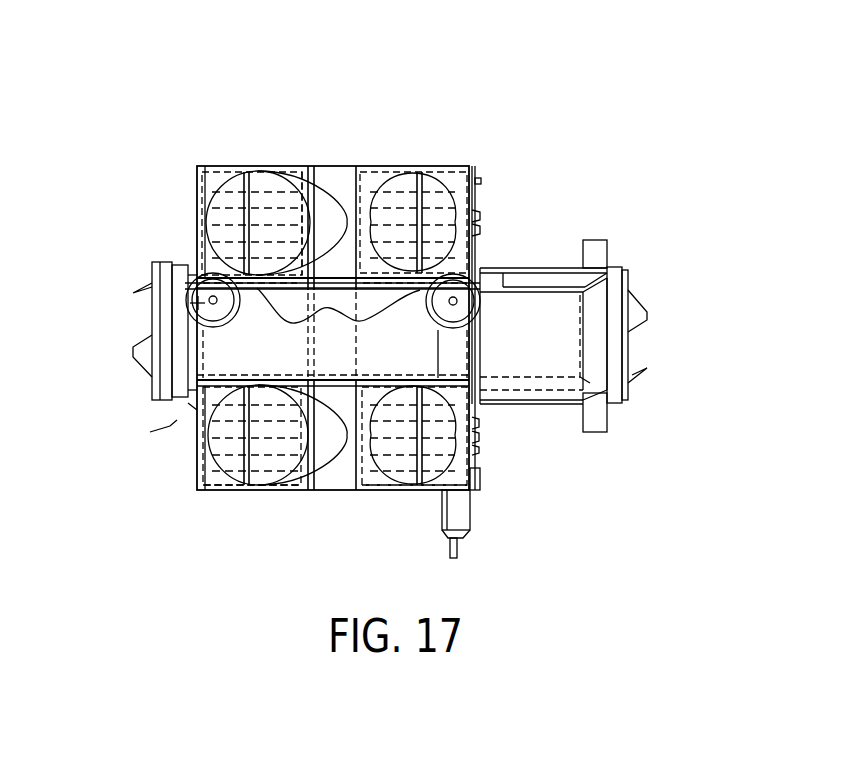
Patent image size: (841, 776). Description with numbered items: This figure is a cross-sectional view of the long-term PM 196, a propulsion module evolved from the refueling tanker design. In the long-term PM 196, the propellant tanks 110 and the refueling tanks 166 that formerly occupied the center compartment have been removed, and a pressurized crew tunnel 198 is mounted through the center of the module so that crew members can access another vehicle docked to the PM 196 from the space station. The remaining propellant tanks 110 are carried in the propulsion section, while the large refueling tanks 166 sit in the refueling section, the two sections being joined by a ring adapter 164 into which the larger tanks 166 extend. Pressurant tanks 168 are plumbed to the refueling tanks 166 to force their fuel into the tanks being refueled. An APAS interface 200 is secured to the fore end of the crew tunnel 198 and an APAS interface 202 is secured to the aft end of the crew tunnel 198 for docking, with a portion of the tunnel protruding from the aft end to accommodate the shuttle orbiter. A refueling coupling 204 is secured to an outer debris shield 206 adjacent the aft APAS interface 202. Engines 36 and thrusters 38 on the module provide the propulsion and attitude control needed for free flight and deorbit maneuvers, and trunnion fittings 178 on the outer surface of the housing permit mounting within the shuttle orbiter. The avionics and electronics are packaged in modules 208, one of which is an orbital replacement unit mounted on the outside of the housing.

The long-term propulsion module 196 is at (553, 130).
The refueling tank 166 is at (246, 168).
The avionics and electronics module 208 is at (213, 185).
The propellant tank 110 is at (382, 177).
The trunnion fitting 178 is at (190, 305).
The crew tunnel 198 is at (530, 281).
The outer debris shield 206 is at (560, 268).
The APAS interface 202 is at (655, 333).
The APAS interface 200 is at (143, 372).
The pressurant tank 168 is at (177, 420).
The refueling coupling 204 is at (595, 432).
The thruster 38 is at (488, 441).
The engine 36 is at (490, 487).
The ring adapter 164 is at (350, 477).